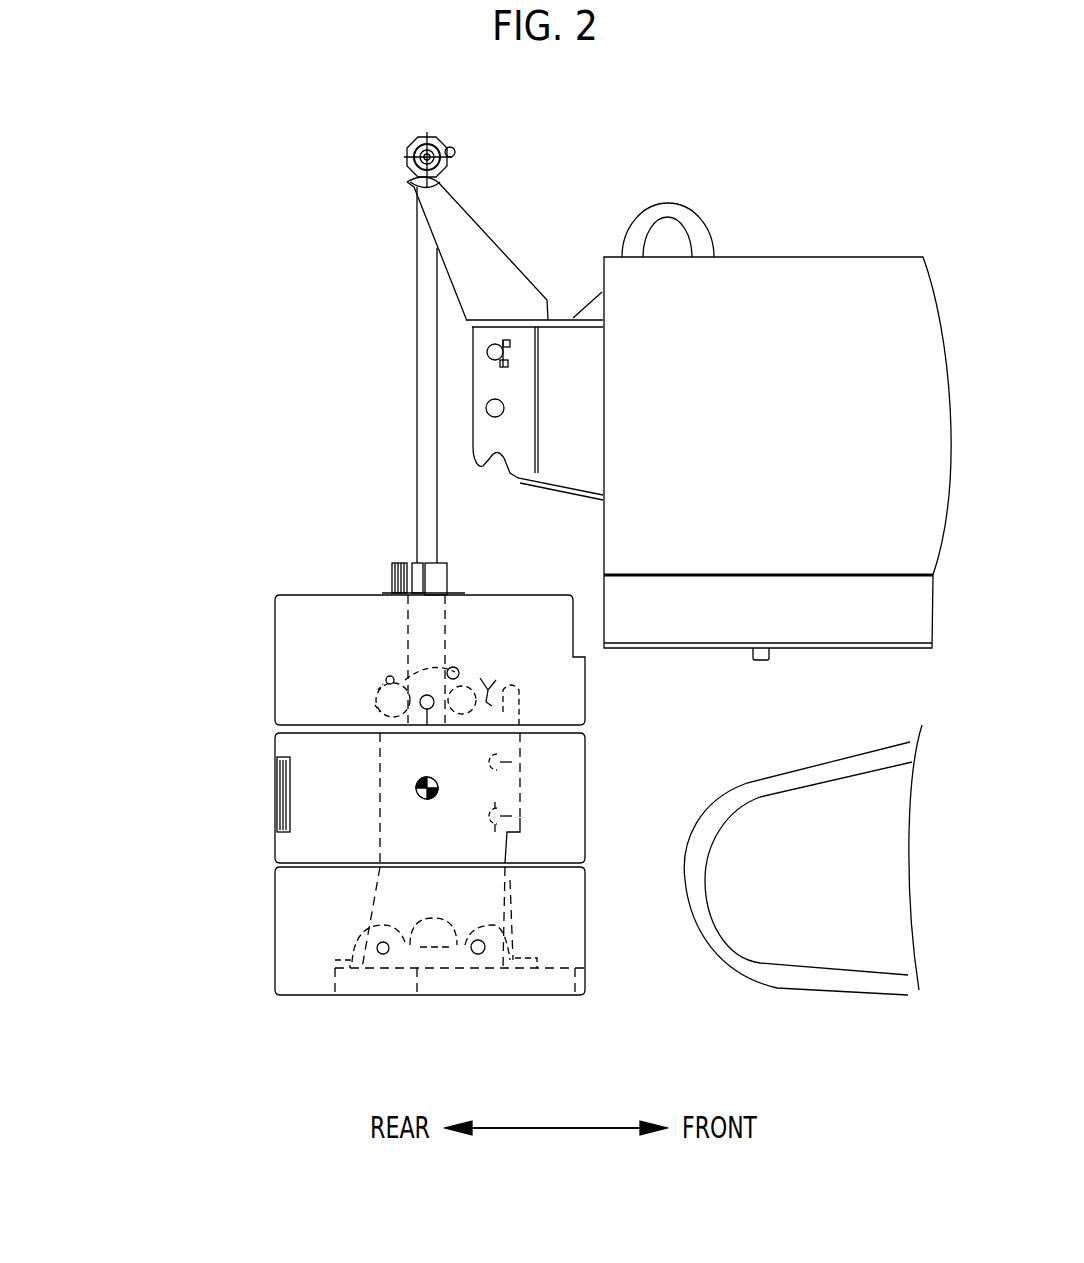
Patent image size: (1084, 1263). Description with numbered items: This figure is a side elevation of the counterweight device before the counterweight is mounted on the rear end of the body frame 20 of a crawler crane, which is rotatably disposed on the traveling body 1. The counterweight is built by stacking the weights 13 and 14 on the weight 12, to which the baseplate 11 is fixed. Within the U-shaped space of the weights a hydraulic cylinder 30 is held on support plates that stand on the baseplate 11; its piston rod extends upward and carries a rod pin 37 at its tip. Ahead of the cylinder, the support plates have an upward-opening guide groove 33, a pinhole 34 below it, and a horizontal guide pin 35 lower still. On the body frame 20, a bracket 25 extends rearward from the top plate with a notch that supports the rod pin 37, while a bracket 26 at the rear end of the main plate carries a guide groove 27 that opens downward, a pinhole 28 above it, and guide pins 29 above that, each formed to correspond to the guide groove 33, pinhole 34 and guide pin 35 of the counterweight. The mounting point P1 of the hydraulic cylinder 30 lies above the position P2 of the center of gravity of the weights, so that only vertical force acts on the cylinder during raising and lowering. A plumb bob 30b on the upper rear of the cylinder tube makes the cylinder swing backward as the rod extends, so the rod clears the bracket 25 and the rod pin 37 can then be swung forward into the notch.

The traveling body 1 is at (840, 990).
The baseplate 11 is at (515, 988).
The weight 12 is at (275, 935).
The weight 13 is at (277, 797).
The weight 14 is at (275, 668).
The body frame 20 is at (797, 223).
The bracket 25 is at (447, 212).
The bracket 26 is at (521, 343).
The guide groove 27 is at (497, 460).
The pinhole 28 is at (486, 410).
The guide pin 29 is at (487, 352).
The hydraulic cylinder 30 is at (415, 478).
The plumb bob 30b is at (390, 577).
The guide groove 33 is at (490, 680).
The pinhole 34 is at (520, 757).
The guide pin 35 is at (520, 813).
The rod pin 37 is at (405, 160).
The mounting point P1 is at (427, 695).
The position of the center of gravity P2 is at (422, 782).